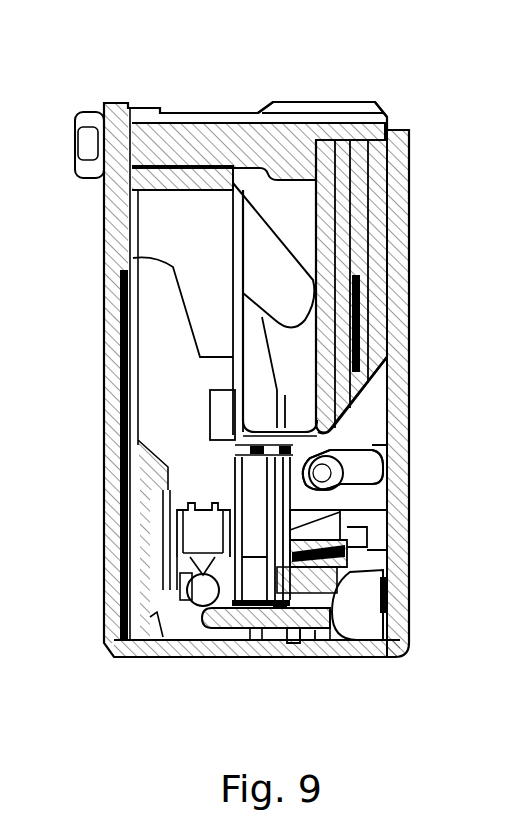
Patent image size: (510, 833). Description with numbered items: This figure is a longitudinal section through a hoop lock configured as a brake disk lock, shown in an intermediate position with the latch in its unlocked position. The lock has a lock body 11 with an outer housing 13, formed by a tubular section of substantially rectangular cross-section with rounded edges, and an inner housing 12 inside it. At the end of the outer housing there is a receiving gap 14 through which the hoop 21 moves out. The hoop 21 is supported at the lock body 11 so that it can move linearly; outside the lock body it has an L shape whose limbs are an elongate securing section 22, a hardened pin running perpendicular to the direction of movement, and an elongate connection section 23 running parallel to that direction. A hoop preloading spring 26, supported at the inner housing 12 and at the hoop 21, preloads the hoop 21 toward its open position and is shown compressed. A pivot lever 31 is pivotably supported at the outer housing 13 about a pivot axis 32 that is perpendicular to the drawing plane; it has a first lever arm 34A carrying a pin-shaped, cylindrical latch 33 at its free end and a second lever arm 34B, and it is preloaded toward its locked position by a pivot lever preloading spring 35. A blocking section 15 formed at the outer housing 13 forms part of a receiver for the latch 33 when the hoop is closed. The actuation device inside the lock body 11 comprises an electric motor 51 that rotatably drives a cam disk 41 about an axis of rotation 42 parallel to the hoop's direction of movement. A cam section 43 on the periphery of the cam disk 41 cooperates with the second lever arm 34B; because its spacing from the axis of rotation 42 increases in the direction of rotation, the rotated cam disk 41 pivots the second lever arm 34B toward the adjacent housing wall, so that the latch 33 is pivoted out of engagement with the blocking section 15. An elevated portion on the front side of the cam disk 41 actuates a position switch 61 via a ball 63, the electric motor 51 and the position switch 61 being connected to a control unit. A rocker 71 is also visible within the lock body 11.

The lock body 11 is at (413, 260).
The inner housing 12 is at (370, 305).
The outer housing 13 is at (393, 150).
The receiving gap 14 is at (283, 205).
The blocking section 15 is at (372, 418).
The hoop 21 is at (383, 98).
The securing section 22 is at (203, 158).
The connection section 23 is at (325, 235).
The hoop preloading spring 26 is at (360, 333).
The pivot lever 31 is at (352, 486).
The pivot axis 32 is at (365, 548).
The latch 33 is at (322, 473).
The first lever arm 34A is at (390, 494).
The second lever arm 34B is at (363, 610).
The pivot lever preloading spring 35 is at (290, 633).
The cam disk 41 is at (213, 620).
The axis of rotation 42 is at (263, 632).
The cam section 43 is at (305, 630).
The electric motor 51 is at (257, 488).
The position switch 61 is at (203, 545).
The ball 63 is at (205, 590).
The rocker 71 is at (124, 272).